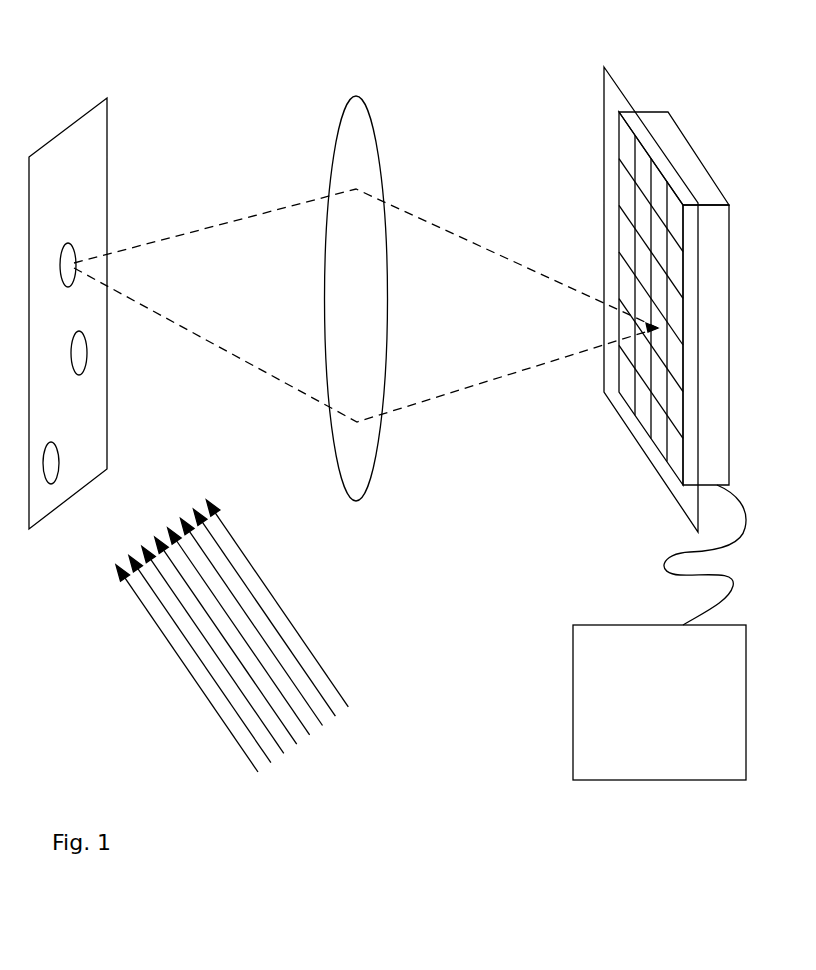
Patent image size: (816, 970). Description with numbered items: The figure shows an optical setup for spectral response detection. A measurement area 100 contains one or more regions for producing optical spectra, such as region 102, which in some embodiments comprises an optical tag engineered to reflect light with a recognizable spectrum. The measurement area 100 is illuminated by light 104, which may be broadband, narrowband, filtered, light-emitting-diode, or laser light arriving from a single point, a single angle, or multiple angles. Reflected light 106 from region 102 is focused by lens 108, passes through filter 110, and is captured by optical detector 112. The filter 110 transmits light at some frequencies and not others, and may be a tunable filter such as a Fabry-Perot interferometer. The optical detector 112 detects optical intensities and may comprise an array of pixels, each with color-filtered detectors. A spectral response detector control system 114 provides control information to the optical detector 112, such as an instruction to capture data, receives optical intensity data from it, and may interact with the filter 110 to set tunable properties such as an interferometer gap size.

The measurement area 100 is at (104, 97).
The region 102 is at (77, 245).
The light 104 is at (295, 631).
The reflected light 106 is at (220, 226).
The lens 108 is at (350, 96).
The filter 110 is at (607, 68).
The optical detector 112 is at (672, 112).
The spectral response detector control system 114 is at (573, 692).